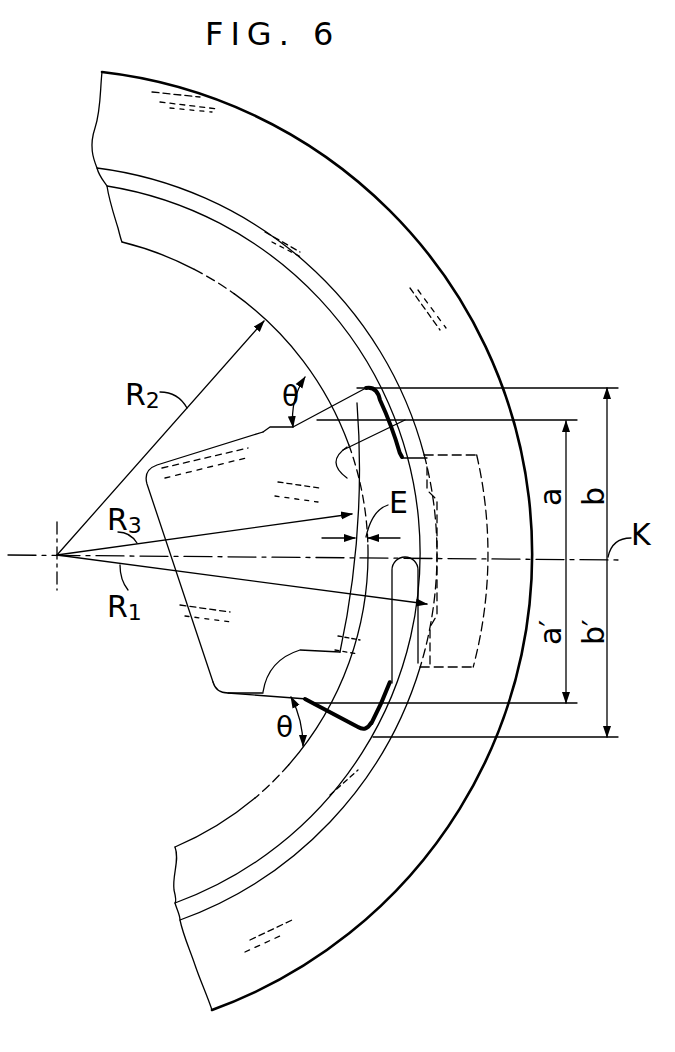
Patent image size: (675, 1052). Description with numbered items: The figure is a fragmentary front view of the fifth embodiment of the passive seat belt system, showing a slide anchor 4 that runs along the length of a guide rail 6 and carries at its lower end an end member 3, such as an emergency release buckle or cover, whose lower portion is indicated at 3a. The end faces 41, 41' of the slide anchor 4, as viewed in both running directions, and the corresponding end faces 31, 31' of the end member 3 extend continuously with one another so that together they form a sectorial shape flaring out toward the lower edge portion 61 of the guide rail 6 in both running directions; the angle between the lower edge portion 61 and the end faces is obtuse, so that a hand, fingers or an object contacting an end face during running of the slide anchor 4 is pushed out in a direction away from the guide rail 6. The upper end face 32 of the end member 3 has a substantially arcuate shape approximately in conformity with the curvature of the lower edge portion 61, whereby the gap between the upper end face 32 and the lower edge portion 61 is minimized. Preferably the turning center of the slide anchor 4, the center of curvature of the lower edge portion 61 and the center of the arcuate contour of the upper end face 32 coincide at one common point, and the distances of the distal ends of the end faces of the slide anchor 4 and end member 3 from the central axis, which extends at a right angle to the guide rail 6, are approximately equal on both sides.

The end member 3 is at (200, 655).
The bottom edge of brake shoe 3a is at (257, 693).
The slide anchor 4 is at (357, 405).
The end face of end member 31 is at (278, 420).
The end face of end member 31' is at (286, 734).
The upper end face of end member 32 is at (357, 403).
The end face of slide anchor 41 is at (321, 418).
The end face of slide anchor 41' is at (353, 682).
The guide rail 6 is at (387, 837).
The lower edge portion 61 is at (233, 812).